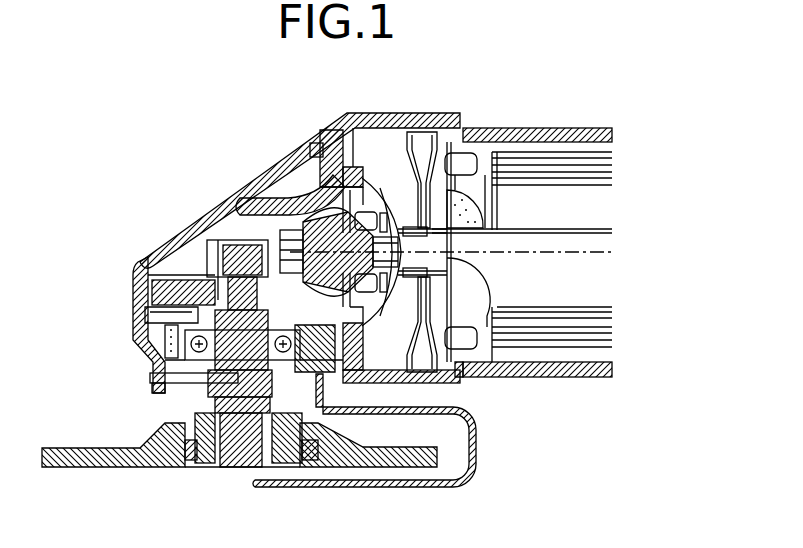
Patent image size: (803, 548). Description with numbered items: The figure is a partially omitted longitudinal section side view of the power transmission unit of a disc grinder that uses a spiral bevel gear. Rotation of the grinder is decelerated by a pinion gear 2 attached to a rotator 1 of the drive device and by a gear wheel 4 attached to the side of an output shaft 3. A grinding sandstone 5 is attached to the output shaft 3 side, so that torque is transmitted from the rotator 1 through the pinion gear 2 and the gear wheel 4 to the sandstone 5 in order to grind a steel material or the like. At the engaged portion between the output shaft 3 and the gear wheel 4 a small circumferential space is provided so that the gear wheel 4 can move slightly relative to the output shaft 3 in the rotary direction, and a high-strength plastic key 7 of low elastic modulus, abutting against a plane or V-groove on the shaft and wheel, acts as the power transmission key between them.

The rotator 1 is at (575, 213).
The pinion gear 2 is at (307, 197).
The output shaft 3 is at (158, 378).
The gear wheel 4 is at (170, 273).
The grinding sandstone 5 is at (112, 448).
The plastic key 7 is at (258, 250).